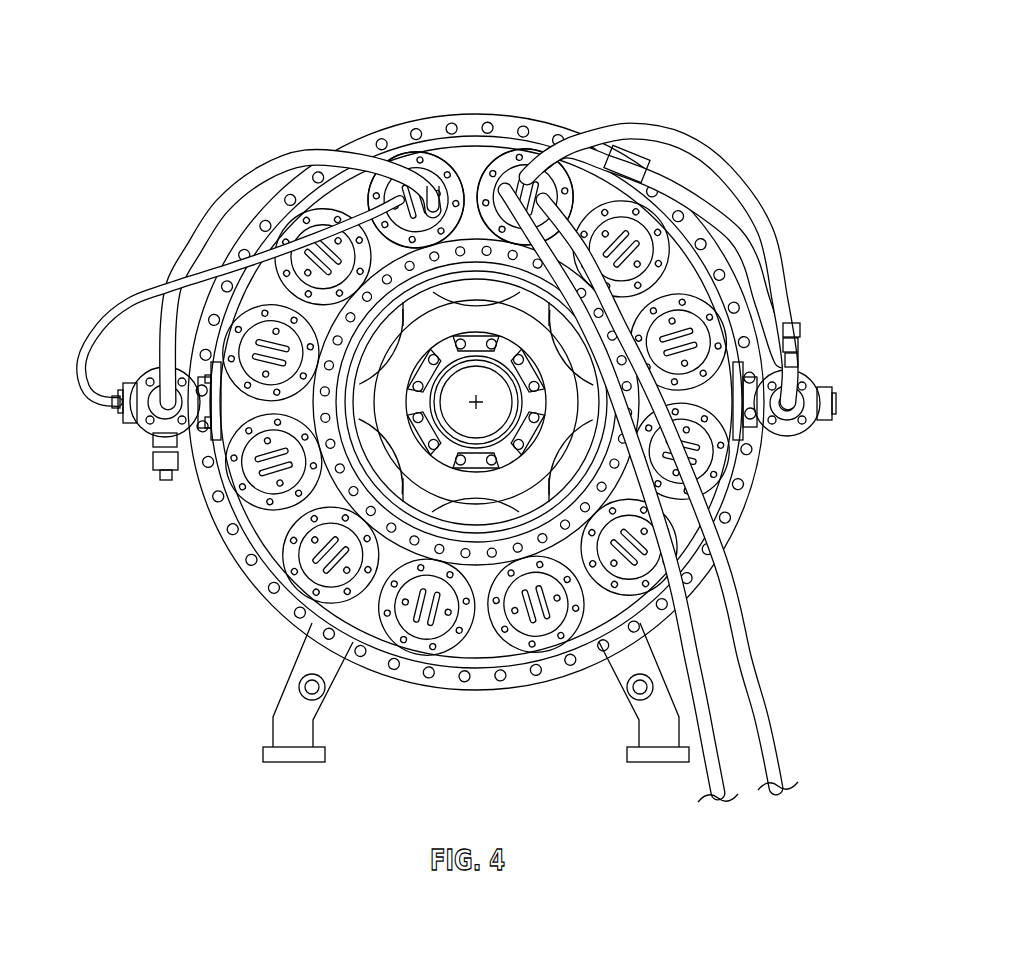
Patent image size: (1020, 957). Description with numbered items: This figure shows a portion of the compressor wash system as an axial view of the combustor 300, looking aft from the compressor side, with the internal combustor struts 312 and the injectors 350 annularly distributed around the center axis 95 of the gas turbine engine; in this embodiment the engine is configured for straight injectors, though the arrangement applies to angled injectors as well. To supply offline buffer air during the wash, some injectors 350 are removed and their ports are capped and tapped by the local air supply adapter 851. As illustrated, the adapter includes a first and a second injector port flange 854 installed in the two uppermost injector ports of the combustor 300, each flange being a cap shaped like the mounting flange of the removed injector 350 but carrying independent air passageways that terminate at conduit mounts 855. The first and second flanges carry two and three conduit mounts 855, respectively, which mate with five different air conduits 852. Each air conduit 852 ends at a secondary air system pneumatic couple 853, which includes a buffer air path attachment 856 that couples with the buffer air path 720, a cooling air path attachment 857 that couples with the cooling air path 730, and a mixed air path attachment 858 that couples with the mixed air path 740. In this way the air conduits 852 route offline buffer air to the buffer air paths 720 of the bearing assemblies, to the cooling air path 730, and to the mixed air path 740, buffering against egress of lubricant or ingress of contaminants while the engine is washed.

The combustor 300 is at (662, 52).
The center axis 95 is at (473, 400).
The internal combustor strut 312 is at (372, 402).
The injector 350 is at (245, 466).
The local air supply adapter 851 is at (424, 150).
The air conduit 852 is at (277, 166).
The secondary air system pneumatic couple 853 is at (120, 375).
The injector port flange 854 is at (442, 173).
The conduit mount 855 is at (383, 163).
The buffer air path attachment 856 is at (802, 399).
The cooling air path attachment 857 is at (167, 422).
The mixed air path attachment 858 is at (110, 388).
The mixed air path 740 is at (120, 420).
The cooling air path 730 is at (156, 420).
The buffer air path 720 is at (795, 413).